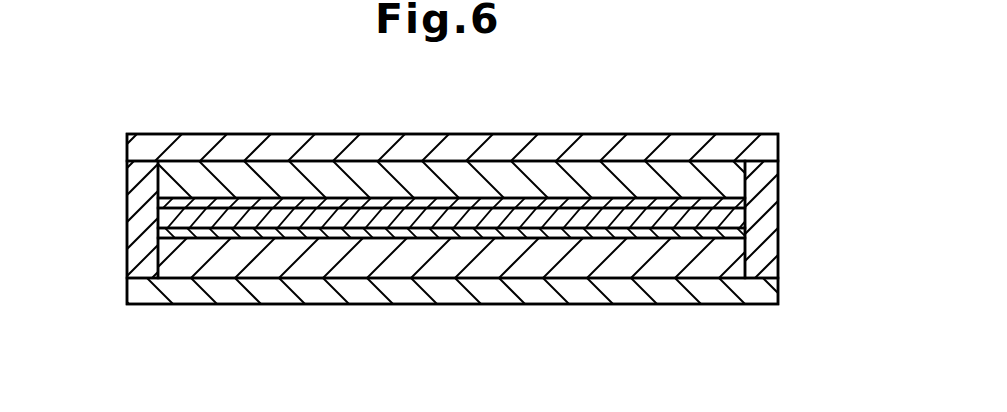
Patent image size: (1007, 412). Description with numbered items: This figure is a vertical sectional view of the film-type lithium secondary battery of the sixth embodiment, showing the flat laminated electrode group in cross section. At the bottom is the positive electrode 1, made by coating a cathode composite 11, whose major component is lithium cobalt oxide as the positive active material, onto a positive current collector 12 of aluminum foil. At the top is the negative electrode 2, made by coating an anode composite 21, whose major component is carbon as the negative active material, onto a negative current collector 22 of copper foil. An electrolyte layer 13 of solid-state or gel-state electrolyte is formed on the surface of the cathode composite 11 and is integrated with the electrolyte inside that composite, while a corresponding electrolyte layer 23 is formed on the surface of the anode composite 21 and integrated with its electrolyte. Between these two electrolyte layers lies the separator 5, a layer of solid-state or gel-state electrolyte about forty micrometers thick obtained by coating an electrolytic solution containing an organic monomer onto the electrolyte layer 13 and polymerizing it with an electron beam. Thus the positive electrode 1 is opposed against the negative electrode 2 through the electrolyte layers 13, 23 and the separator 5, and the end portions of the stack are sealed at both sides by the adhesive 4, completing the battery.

The positive electrode 1 is at (455, 314).
The negative electrode 2 is at (461, 120).
The adhesive 4 is at (142, 203).
The separator 5 is at (732, 218).
The cathode composite 11 is at (558, 252).
The positive current collector 12 is at (548, 295).
The electrolyte layer 13 is at (710, 238).
The anode composite 21 is at (563, 182).
The negative current collector 22 is at (540, 145).
The electrolyte layer 23 is at (713, 202).